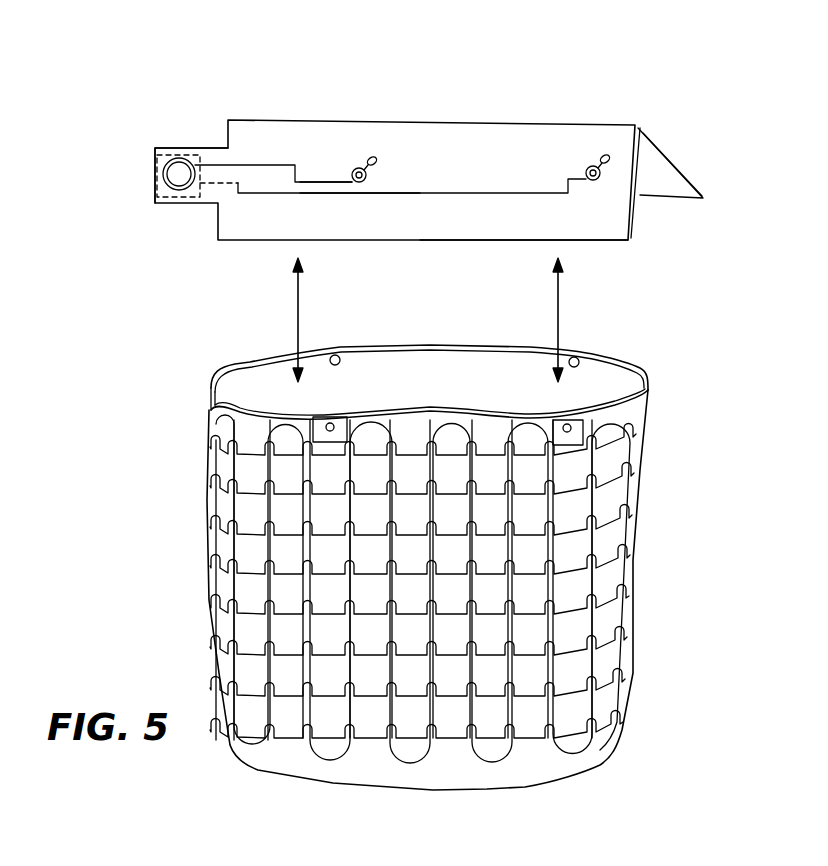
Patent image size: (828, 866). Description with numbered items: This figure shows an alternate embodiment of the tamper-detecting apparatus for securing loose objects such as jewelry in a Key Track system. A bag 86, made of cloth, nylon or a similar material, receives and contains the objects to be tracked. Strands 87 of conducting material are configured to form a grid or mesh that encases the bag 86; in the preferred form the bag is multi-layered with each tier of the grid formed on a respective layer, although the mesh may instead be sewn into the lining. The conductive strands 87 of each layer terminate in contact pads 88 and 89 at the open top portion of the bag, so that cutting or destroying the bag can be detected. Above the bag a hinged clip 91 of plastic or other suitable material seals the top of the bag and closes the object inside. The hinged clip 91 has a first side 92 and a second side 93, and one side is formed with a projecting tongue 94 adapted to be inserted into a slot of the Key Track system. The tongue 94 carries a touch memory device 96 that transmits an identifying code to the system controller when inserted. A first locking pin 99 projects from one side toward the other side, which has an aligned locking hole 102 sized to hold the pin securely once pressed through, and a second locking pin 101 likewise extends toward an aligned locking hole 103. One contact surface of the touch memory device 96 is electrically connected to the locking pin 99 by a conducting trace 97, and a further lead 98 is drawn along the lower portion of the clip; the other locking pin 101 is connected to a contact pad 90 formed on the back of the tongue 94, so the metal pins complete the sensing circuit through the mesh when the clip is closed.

The bag 86 is at (180, 547).
The strands 87 is at (329, 613).
The contact pad 88 is at (574, 432).
The contact pad 89 is at (328, 432).
The contact pad 90 is at (195, 148).
The hinged clip 91 is at (504, 88).
The first side 92 is at (612, 217).
The second side 93 is at (658, 180).
The projecting tongue 94 is at (165, 148).
The touch memory device 96 is at (163, 186).
The conducting trace 97 is at (263, 165).
The lower channel wall 98 is at (260, 197).
The first locking pin 99 is at (380, 167).
The second locking pin 101 is at (594, 165).
The locking hole 102 is at (362, 166).
The locking hole 103 is at (637, 128).